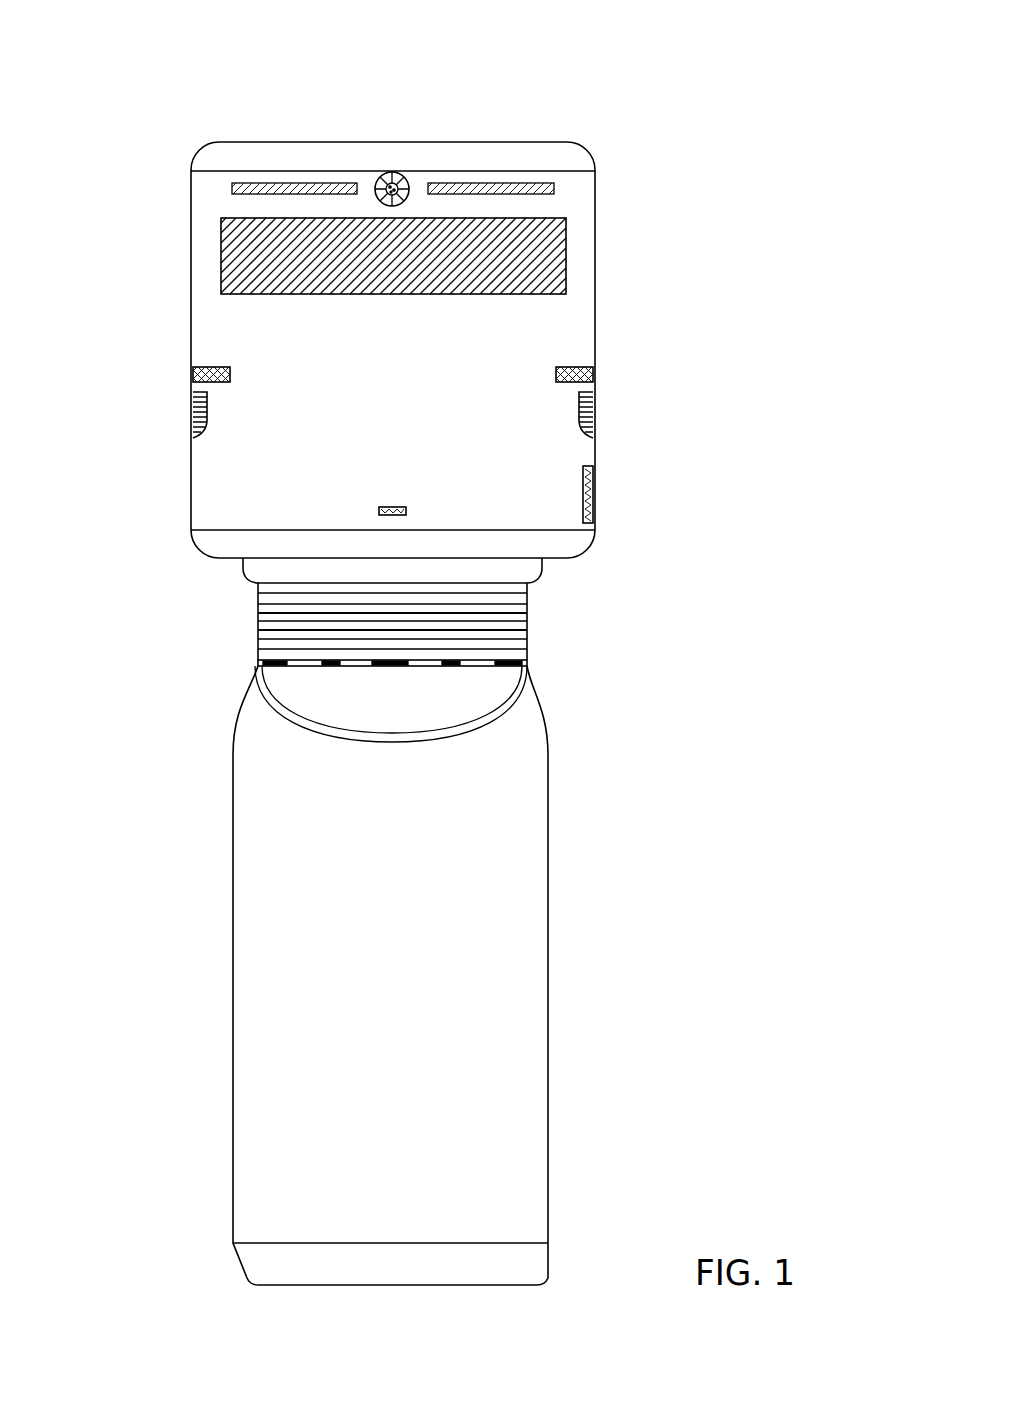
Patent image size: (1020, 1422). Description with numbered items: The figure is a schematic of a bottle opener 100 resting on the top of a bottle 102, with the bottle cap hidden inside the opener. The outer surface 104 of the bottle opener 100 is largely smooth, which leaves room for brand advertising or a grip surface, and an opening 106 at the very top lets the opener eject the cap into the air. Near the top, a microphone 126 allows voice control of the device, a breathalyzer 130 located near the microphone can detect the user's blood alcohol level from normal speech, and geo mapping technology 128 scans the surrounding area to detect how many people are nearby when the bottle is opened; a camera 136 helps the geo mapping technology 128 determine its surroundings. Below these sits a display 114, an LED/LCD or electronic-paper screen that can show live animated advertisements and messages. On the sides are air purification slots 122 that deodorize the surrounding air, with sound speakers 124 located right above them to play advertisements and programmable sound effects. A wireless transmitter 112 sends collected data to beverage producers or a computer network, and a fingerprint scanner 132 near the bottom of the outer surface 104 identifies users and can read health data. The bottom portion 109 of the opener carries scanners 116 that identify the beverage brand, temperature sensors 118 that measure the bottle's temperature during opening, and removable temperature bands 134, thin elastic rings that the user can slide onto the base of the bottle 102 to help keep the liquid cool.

The bottle opener 100 is at (657, 232).
The bottle 102 is at (562, 848).
The outer surface 104 is at (598, 313).
The opening 106 is at (513, 78).
The bottom portion 109 is at (542, 627).
The wireless transmitter 112 is at (377, 511).
The display 114 is at (245, 262).
The scanners 116 is at (256, 663).
The temperature sensors 118 is at (328, 670).
The air purification slots 122 is at (191, 418).
The sound speakers 124 is at (595, 375).
The microphone 126 is at (408, 186).
The geo mapping technology 128 is at (228, 189).
The breathalyzer 130 is at (382, 177).
The fingerprint scanner 132 is at (595, 494).
The temperature bands 134 is at (256, 622).
The camera 136 is at (191, 375).